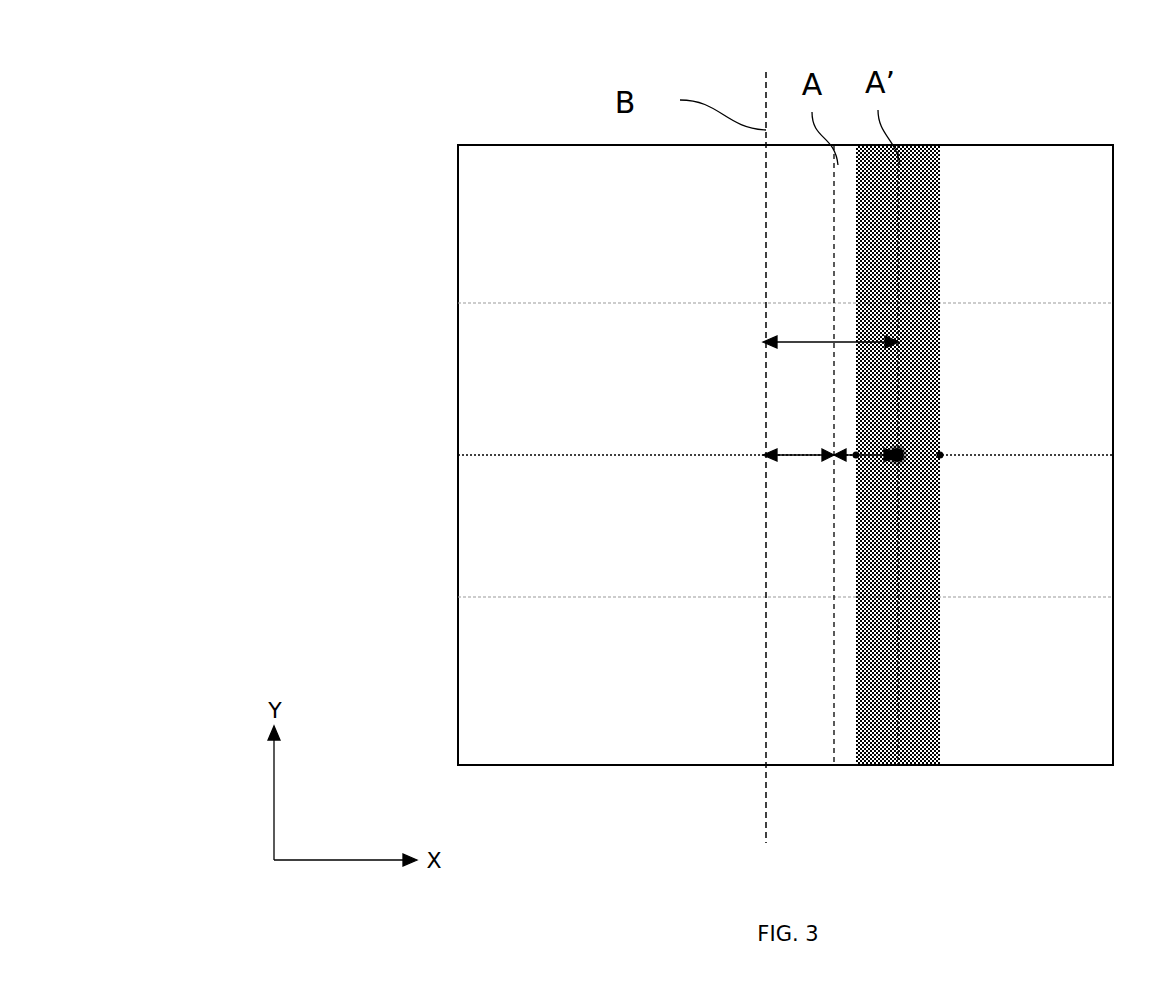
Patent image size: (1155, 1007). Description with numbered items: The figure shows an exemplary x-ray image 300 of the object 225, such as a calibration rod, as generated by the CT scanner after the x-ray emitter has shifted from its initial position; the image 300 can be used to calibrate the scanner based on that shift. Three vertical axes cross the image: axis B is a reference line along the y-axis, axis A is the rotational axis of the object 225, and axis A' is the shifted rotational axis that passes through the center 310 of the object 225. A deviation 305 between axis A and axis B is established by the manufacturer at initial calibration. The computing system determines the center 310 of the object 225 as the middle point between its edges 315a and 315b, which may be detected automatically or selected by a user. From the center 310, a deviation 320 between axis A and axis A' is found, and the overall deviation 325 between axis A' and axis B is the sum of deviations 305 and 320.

The x-ray image 300 is at (355, 76).
The object 225 is at (935, 192).
The deviation between axis A' and axis B 325 is at (785, 340).
The deviation between axis A and axis B 305 is at (790, 452).
The deviation between axis A and axis A' 320 is at (873, 455).
The center of the object 310 is at (898, 455).
The first edge of the object 315a is at (853, 455).
The second edge of the object 315b is at (942, 455).